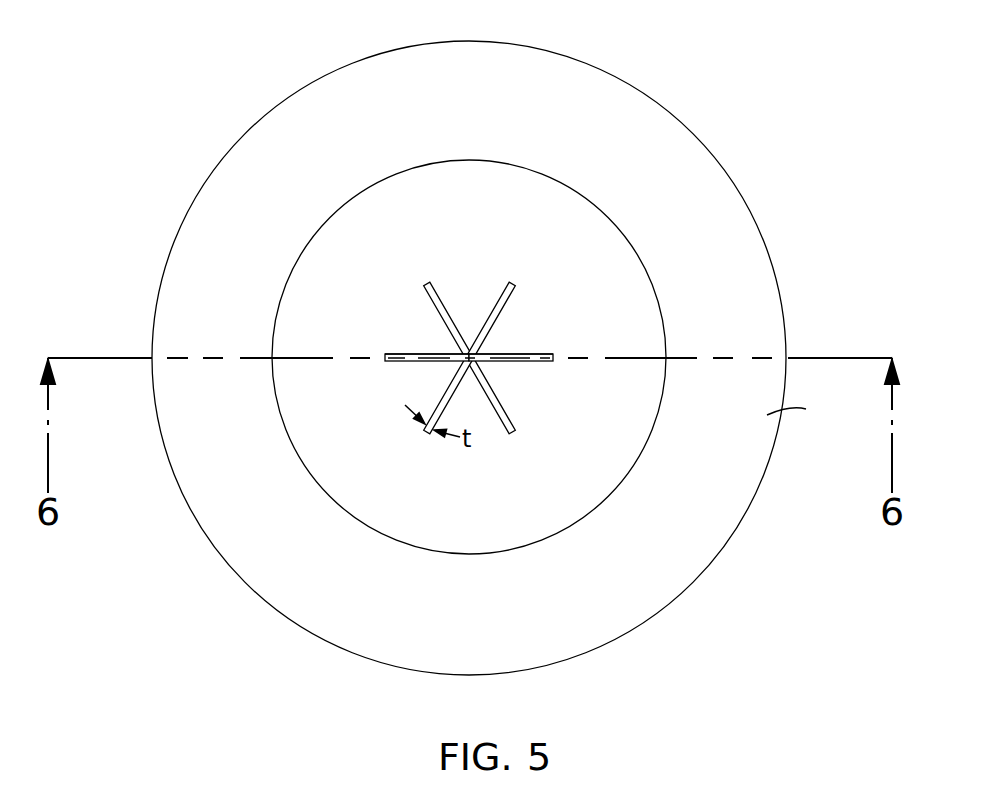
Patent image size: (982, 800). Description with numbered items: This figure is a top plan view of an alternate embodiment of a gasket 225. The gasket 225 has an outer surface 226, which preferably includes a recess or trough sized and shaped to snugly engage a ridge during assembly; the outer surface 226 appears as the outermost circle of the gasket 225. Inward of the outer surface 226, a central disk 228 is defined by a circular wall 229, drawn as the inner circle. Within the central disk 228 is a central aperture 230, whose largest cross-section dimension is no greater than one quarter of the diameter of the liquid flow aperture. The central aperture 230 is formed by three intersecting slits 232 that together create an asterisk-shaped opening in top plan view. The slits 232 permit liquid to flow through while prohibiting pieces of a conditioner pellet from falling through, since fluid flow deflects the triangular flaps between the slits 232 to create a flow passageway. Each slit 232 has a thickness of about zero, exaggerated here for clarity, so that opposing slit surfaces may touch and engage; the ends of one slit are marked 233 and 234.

The gasket 225 is at (190, 140).
The outer surface 226 is at (806, 409).
The central disk 228 is at (557, 508).
The circular wall 229 is at (308, 472).
The central aperture 230 is at (482, 301).
The intersecting slits 232 is at (508, 301).
The horizontal strut left end 233 is at (383, 355).
The horizontal strut right end 234 is at (553, 354).